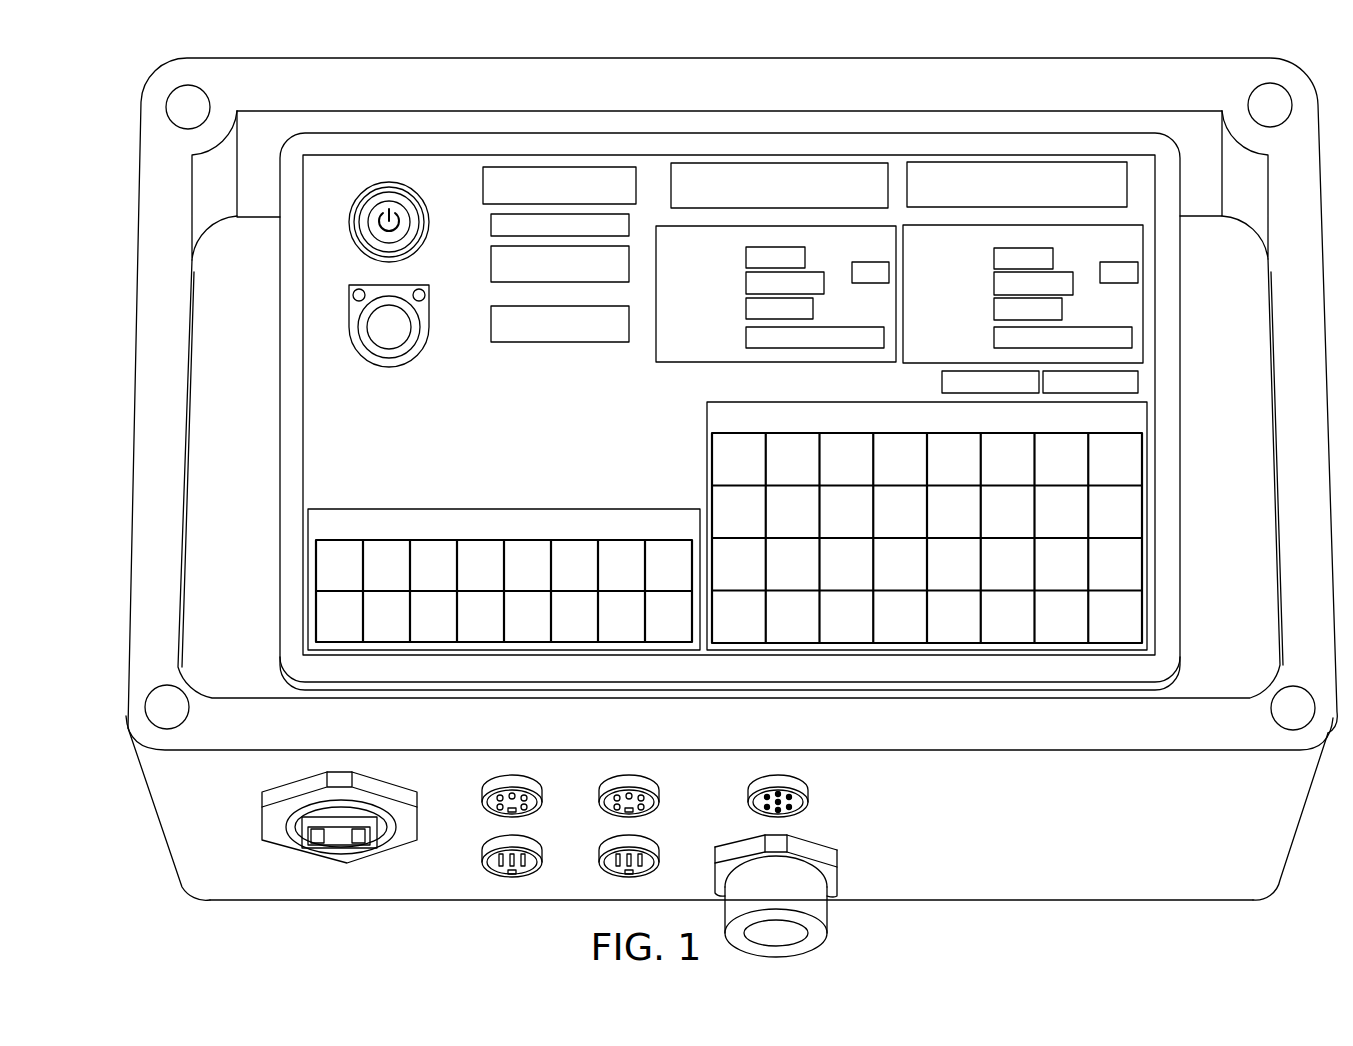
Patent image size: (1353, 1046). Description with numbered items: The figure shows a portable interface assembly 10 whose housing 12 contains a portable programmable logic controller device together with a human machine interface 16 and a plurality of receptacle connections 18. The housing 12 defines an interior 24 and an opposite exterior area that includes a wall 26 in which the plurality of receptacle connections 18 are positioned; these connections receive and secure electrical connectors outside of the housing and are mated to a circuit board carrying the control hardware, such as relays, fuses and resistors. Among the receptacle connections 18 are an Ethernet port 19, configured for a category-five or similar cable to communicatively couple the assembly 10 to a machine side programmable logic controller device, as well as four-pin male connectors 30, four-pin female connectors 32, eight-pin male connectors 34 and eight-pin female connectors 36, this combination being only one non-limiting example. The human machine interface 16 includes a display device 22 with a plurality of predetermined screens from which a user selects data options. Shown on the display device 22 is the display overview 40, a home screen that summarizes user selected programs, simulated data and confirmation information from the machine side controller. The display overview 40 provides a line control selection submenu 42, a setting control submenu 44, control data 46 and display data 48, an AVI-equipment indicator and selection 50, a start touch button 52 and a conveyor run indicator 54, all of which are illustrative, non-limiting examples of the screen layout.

The portable interface assembly 10 is at (107, 122).
The housing 12 is at (1270, 843).
The human machine interface 16 is at (1207, 413).
The plurality of receptacle connections 18 is at (462, 880).
The Ethernet port 19 is at (262, 828).
The display device 22 is at (1162, 133).
The interior 24 is at (1266, 464).
The wall 26 is at (1033, 893).
The 4-pin male connectors 30 is at (537, 848).
The 4 pin female connectors 32 is at (512, 778).
The 8-pin male connectors 34 is at (822, 912).
The 8-pin female connectors 36 is at (803, 790).
The display overview 40 is at (312, 438).
The line control selection submenu 42 is at (1010, 162).
The setting control submenu 44 is at (782, 163).
The control data 46 is at (843, 232).
The display data 48 is at (1045, 232).
The AVI-equipment indicator and selection 50 is at (708, 420).
The start touch button 52 is at (365, 232).
The conveyor run indicator 54 is at (415, 340).